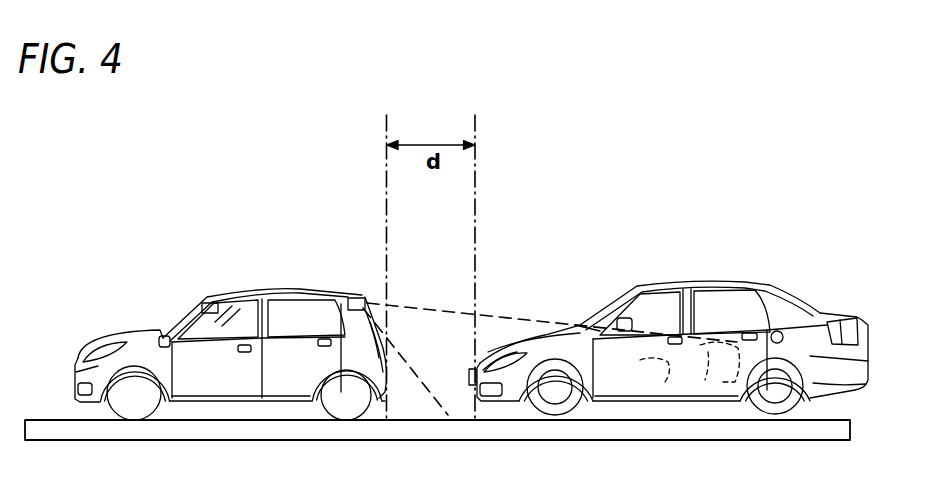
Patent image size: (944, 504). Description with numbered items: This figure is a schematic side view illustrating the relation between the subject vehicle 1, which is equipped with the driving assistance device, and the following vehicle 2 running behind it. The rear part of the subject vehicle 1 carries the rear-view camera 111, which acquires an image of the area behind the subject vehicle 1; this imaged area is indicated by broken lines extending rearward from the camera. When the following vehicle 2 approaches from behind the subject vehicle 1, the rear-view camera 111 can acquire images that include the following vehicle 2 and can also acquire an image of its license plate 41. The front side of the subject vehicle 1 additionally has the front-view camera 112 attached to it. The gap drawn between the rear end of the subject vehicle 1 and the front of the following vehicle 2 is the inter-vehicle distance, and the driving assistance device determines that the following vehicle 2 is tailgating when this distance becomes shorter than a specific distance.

The subject vehicle 1 is at (172, 278).
The following vehicle 2 is at (761, 251).
The license plate 41 is at (471, 386).
The rear-view camera 111 is at (356, 297).
The front-view camera 112 is at (200, 313).